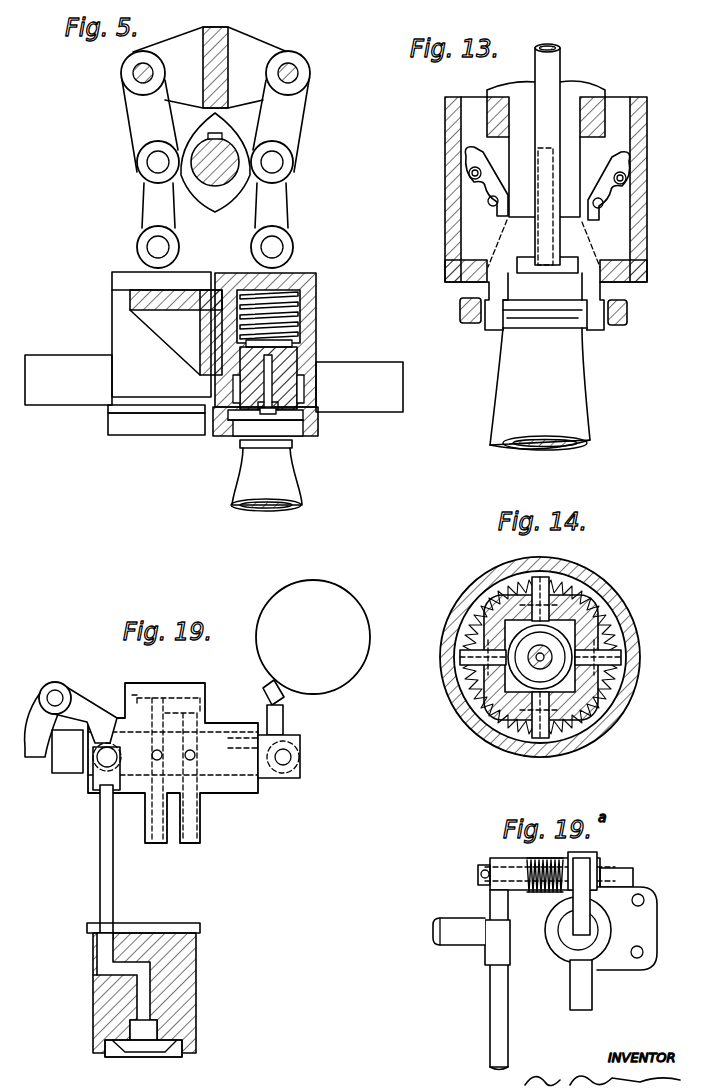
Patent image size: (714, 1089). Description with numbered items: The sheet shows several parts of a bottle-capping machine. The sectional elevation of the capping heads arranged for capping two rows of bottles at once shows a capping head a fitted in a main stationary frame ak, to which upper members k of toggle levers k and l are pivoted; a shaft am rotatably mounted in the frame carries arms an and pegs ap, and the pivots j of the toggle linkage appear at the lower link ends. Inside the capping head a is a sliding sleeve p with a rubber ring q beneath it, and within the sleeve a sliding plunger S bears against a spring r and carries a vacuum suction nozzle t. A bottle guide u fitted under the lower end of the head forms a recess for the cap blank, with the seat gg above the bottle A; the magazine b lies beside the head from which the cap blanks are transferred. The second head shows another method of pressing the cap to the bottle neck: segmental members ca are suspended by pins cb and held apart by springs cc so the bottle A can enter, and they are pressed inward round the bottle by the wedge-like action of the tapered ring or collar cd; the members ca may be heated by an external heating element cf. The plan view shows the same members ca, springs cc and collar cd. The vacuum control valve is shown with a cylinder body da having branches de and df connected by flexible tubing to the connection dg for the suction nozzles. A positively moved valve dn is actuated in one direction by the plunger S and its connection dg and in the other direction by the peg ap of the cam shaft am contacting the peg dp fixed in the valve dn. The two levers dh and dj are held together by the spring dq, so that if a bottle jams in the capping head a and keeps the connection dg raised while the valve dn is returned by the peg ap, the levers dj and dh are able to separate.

In FIG. 5, the main stationary frame ak is at (212, 68).
In FIG. 5, the upper member of toggle lever k is at (215, 117).
In FIG. 5, the toggle lever member l is at (215, 205).
In FIG. 5, the pivot pin j is at (177, 265).
In FIG. 5, the arm an is at (203, 190).
In FIG. 5, the shaft am is at (218, 165).
In FIG. 19, the shaft am is at (313, 637).
In FIG. 5, the capping head a is at (345, 322).
In FIG. 5, the spring r is at (277, 312).
In FIG. 5, the sliding sleeve p is at (307, 355).
In FIG. 5, the rubber ring q is at (308, 400).
In FIG. 5, the magazine b is at (214, 383).
In FIG. 5, the valve seat gg is at (298, 420).
In FIG. 5, the bottle guide u is at (262, 411).
In FIG. 5, the vacuum suction nozzle t is at (263, 414).
In FIG. 19, the vacuum suction nozzle t is at (137, 1030).
In FIG. 5, the sliding plunger S is at (290, 422).
In FIG. 19, the sliding plunger S is at (105, 997).
In FIG. 5, the bottle A is at (266, 475).
In FIG. 13, the bottle A is at (540, 375).
In FIG. 13, the pin cb is at (490, 207).
In FIG. 13, the spring cc is at (626, 180).
In FIG. 14, the spring cc is at (515, 595).
In FIG. 13, the tapered ring or collar cd is at (635, 252).
In FIG. 14, the tapered ring or collar cd is at (578, 575).
In FIG. 13, the segmental member ca is at (492, 318).
In FIG. 14, the segmental member ca is at (468, 657).
In FIG. 13, the external heating element cf is at (460, 316).
In FIG. 19, the lever dh is at (84, 720).
In FIG. 19, the lever dj is at (36, 758).
In FIG. 19, the positively moved valve dn is at (67, 751).
In FIG. 19, the vacuum connection dg is at (98, 777).
In FIG. 19A, the vacuum connection dg is at (471, 980).
In FIG. 19, the branch de is at (157, 838).
In FIG. 19, the branch df is at (198, 838).
In FIG. 19, the cylinder body da is at (234, 785).
In FIG. 19, the peg dp is at (277, 722).
In FIG. 19, the peg ap is at (265, 690).
In FIG. 19A, the spring dq is at (536, 893).